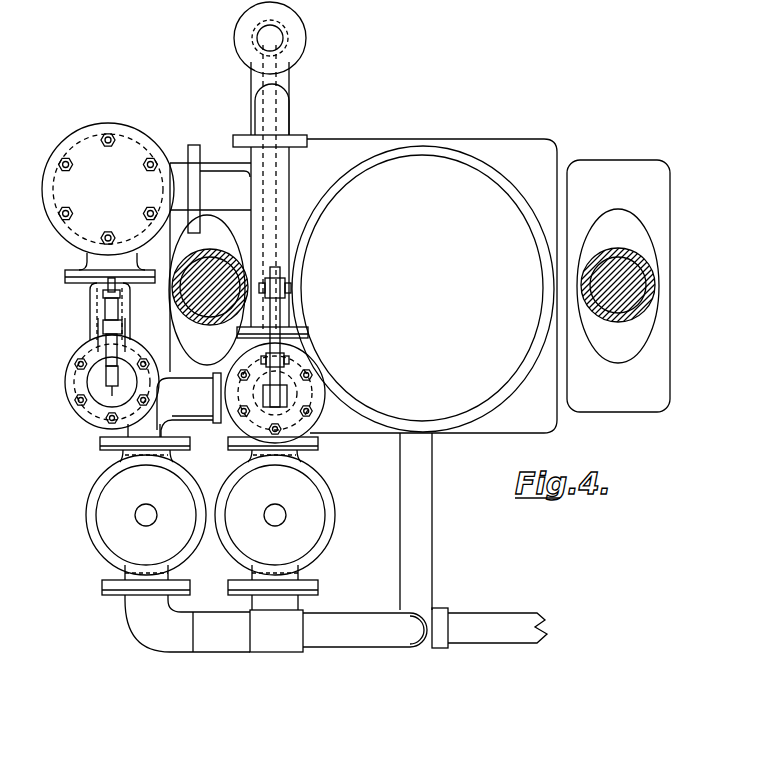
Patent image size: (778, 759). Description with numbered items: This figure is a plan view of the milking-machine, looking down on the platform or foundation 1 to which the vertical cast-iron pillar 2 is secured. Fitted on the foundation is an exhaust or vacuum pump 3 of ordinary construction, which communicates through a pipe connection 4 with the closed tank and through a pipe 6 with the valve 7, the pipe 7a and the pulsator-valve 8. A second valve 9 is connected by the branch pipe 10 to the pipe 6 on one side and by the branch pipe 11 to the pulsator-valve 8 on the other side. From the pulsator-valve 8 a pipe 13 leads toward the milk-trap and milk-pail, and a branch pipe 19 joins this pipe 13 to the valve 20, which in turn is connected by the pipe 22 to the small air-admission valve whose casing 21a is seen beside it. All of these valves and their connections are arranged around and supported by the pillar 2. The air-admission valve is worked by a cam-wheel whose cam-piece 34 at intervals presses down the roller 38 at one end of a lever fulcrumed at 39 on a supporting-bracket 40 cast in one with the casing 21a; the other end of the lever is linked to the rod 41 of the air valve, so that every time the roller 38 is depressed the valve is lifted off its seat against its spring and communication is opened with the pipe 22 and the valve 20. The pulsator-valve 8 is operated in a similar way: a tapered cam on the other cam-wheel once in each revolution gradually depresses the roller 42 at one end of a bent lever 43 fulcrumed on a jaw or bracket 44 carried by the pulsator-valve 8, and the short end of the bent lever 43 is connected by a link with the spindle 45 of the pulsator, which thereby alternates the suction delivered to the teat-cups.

The platform or foundation 1 is at (360, 428).
The vertical cast-iron pillar 2 is at (203, 327).
The exhaust or vacuum pump 3 is at (423, 289).
The pipe connection 4 is at (420, 498).
The pipe 6 is at (333, 613).
The valve 7 is at (123, 527).
The pipe 7a is at (192, 407).
The pulsator-valve 8 is at (312, 384).
The valve 9 is at (310, 535).
The branch pipe 10 is at (273, 602).
The branch pipe 11 is at (282, 462).
The pipe 13 is at (273, 84).
The branch pipe 19 is at (210, 189).
The valve 20 is at (108, 203).
The casing 21a is at (103, 400).
The pipe 22 is at (98, 312).
The cam-piece 34 is at (96, 331).
The roller 38 is at (107, 292).
The fulcrum 39 is at (108, 330).
The supporting-bracket 40 is at (108, 352).
The rod 41 is at (108, 378).
The roller 42 is at (275, 287).
The bent lever 43 is at (277, 318).
The jaw or bracket 44 is at (284, 360).
The spindle 45 is at (284, 402).